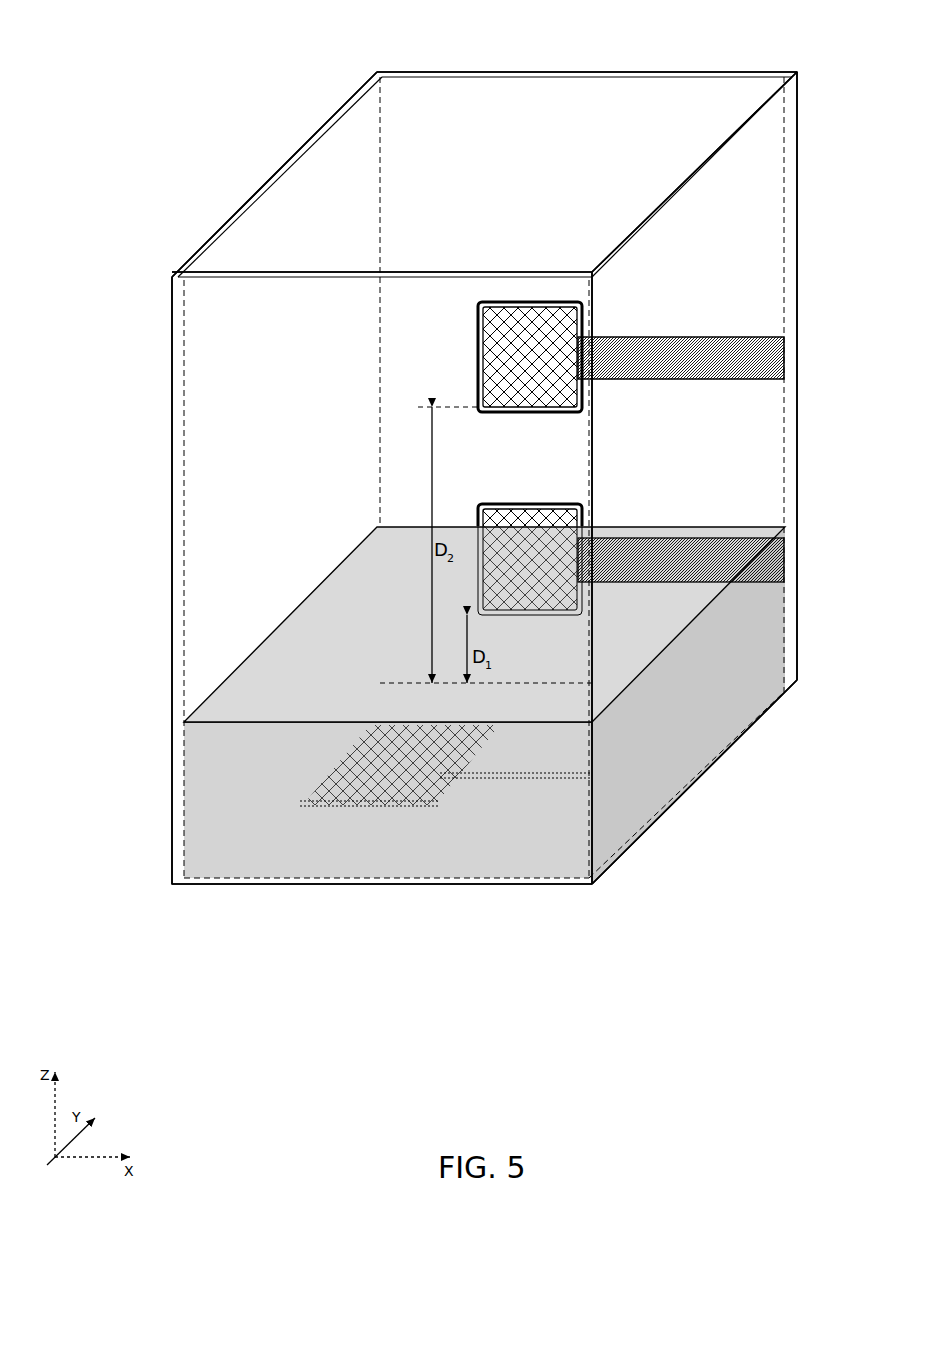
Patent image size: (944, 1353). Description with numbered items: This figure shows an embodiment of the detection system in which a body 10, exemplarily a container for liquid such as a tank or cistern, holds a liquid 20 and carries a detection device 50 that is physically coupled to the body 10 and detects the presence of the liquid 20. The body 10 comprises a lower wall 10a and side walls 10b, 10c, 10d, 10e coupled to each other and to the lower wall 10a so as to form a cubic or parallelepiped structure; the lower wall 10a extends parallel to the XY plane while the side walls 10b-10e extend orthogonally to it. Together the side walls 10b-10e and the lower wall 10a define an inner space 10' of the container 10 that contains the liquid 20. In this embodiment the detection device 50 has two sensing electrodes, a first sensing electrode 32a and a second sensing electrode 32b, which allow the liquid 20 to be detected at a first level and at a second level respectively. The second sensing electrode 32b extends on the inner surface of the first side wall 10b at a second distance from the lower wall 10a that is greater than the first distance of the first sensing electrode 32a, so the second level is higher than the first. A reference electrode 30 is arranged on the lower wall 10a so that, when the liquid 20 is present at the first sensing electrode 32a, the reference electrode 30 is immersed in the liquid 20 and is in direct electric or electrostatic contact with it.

The body 10 is at (484, 454).
The inner space 10' is at (411, 268).
The lower wall 10a is at (480, 861).
The first side wall 10b is at (530, 125).
The second side wall 10c is at (283, 198).
The side wall 10d is at (420, 291).
The side wall 10e is at (668, 222).
The liquid 20 is at (342, 597).
The reference electrode 30 is at (686, 759).
The first sensing electrode 32a is at (767, 558).
The second sensing electrode 32b is at (768, 358).
The detection device 50 is at (762, 430).